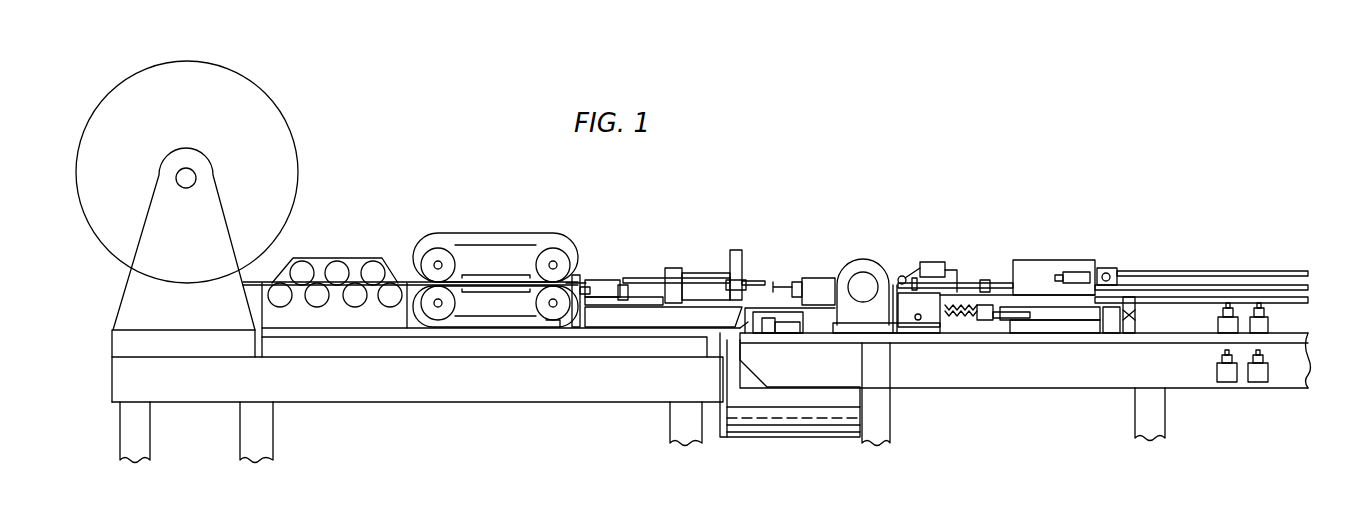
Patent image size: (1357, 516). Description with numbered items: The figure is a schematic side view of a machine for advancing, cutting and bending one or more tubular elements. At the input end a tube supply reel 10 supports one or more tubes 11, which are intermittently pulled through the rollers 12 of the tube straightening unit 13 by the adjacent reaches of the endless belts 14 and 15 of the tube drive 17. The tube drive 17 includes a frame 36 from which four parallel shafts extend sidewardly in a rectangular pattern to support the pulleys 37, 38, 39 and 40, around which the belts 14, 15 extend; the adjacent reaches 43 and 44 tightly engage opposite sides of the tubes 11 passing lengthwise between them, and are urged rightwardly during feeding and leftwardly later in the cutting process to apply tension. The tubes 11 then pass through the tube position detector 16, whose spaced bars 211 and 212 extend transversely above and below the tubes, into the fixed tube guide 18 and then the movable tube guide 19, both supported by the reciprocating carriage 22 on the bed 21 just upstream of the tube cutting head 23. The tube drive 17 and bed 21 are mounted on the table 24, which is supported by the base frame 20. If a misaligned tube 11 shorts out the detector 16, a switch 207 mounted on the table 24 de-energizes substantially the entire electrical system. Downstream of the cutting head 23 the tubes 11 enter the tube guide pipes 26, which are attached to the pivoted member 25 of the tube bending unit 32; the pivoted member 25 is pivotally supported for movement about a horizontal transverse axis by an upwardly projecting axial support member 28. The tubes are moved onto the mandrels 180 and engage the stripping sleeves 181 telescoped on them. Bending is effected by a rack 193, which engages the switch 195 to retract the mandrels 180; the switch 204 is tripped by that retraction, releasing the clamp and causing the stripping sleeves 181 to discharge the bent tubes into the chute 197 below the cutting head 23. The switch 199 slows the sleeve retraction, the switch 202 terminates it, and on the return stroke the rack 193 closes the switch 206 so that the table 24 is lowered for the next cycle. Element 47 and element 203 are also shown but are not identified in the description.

The tube supply reel 10 is at (293, 132).
The tubes 11 is at (317, 262).
The rollers 12 is at (345, 262).
The tube straightening unit 13 is at (380, 246).
The endless belt 14 is at (467, 245).
The endless belt 15 is at (458, 322).
The tube position detector 16 is at (578, 276).
The tube drive 17 is at (517, 228).
The fixed tube guide 18 is at (606, 270).
The movable tube guide 19 is at (653, 262).
The base frame 20 is at (580, 404).
The bed 21 is at (655, 329).
The carriage 22 is at (697, 305).
The tube cutting head 23 is at (748, 238).
The table 24 is at (548, 327).
The pivoted member 25 is at (818, 278).
The tube guide pipes 26 is at (777, 281).
The axial support member 28 is at (872, 260).
The tube bending unit 32 is at (859, 248).
The frame 36 is at (420, 318).
The pulley 37 is at (432, 256).
The pulley 38 is at (549, 255).
The pulley 39 is at (403, 320).
The pulley 40 is at (560, 320).
The belt reach 43 is at (466, 276).
The belt reach 44 is at (470, 292).
The support base 47 is at (605, 306).
The mandrels 180 is at (937, 281).
The stripping sleeves 181 is at (982, 262).
The rack 193 is at (948, 318).
The switch 195 is at (775, 332).
The chute 197 is at (813, 425).
The switch 199 is at (1256, 383).
The switch 202 is at (1222, 383).
The switch 203 is at (1218, 325).
The switch 204 is at (1268, 328).
The switch 206 is at (995, 322).
The switch 207 is at (574, 306).
The bar 211 is at (585, 290).
The bar 212 is at (545, 302).